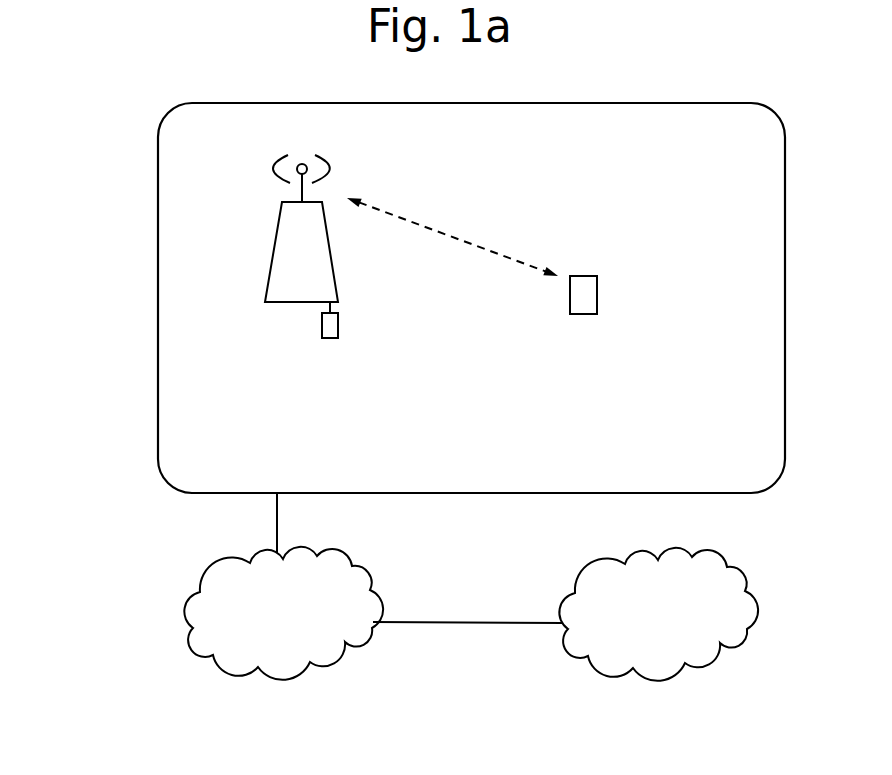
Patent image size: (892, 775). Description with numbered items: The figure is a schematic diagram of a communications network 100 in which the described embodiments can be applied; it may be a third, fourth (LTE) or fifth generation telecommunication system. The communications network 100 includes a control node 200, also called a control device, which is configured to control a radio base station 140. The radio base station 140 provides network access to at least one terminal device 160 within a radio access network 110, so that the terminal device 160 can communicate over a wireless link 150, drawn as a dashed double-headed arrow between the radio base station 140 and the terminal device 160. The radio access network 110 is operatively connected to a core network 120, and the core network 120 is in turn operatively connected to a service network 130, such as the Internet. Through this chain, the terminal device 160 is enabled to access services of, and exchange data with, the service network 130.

The communications network 100 is at (112, 132).
The radio access network 110 is at (158, 418).
The core network 120 is at (297, 621).
The service network 130 is at (681, 621).
The radio base station 140 is at (280, 222).
The wireless link 150 is at (470, 247).
The terminal device 160 is at (580, 314).
The control node 200 is at (320, 330).